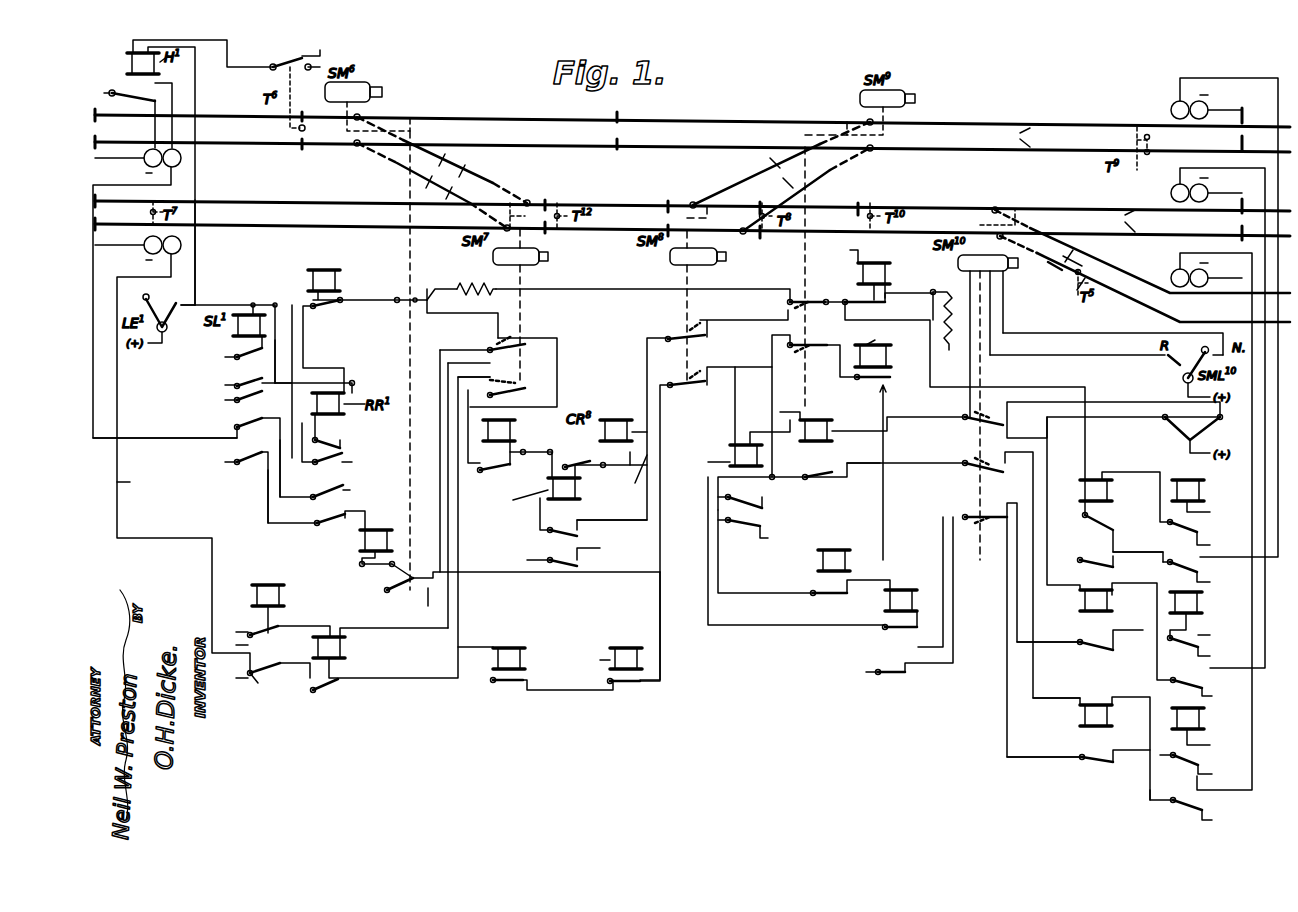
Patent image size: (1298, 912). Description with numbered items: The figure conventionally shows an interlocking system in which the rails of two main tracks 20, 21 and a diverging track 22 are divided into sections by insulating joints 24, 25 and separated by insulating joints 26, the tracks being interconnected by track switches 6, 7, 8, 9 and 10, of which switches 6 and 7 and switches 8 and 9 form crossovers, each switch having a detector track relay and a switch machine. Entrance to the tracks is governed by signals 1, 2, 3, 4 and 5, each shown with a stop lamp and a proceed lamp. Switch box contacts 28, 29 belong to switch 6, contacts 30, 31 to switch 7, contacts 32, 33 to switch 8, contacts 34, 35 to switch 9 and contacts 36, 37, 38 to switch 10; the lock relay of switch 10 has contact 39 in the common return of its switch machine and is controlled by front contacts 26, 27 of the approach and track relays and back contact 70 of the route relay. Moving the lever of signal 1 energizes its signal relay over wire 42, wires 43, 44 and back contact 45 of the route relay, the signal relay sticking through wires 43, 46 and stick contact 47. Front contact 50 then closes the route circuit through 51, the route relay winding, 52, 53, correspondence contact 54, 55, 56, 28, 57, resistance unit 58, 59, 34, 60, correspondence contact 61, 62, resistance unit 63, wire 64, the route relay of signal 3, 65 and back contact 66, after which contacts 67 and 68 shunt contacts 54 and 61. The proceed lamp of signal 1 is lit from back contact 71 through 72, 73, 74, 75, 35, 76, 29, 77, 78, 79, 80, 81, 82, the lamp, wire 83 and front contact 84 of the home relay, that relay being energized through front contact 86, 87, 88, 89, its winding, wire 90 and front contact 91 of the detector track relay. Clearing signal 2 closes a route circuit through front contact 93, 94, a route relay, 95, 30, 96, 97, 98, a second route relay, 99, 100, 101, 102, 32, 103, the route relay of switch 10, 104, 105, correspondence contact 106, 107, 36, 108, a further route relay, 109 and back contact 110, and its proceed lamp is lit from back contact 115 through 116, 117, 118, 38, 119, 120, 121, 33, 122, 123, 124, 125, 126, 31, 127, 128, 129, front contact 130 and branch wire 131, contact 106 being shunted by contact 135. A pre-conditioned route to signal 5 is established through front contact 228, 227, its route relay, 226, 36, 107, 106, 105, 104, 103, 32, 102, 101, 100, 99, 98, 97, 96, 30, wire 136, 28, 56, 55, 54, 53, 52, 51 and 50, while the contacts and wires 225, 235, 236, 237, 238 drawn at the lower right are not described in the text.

The signal 1 is at (165, 292).
The signal 2 is at (172, 451).
The signal 3 is at (1172, 106).
The signal 4 is at (1172, 190).
The signal 5 is at (1172, 275).
The track switch 6 is at (385, 120).
The track switch 7 is at (521, 216).
The track switch 8 is at (757, 180).
The track switch 9 is at (817, 265).
The track switch 10 is at (1018, 230).
The track rails 20 is at (1011, 137).
The track rails 21 is at (1121, 221).
The diverging track rails 22 is at (1170, 297).
The insulating joints 24 is at (627, 128).
The insulating joints 25 is at (692, 210).
The insulating joints 26 is at (813, 592).
The front contact of track relay T10 27 is at (870, 272).
The switch box contact 28 is at (403, 306).
The switch box contact 29 is at (526, 566).
The switch box contact 30 is at (491, 347).
The switch box contact 31 is at (492, 386).
The switch box contact 32 is at (678, 342).
The switch box contact 33 is at (715, 507).
The switch box contact 34 is at (811, 294).
The switch box contact 35 is at (823, 360).
The switch box contact 36 is at (1018, 575).
The switch box contact 37 is at (1088, 424).
The switch box contact 38 is at (1021, 630).
The contact of lock relay L10 39 is at (897, 606).
The wire 42 is at (229, 296).
The wire 43 is at (251, 300).
The wire 44 is at (275, 361).
The back contact of relay RR1 45 is at (335, 447).
The wire 46 is at (285, 305).
The stick contact 47 is at (233, 349).
The front contact of relay SL1 50 is at (239, 379).
The wire 51 is at (242, 395).
The wire 52 is at (315, 380).
The wire 53 is at (303, 350).
The correspondence relay contact 54 is at (326, 318).
The wire 55 is at (352, 282).
The wire 56 is at (395, 291).
The wire 57 is at (439, 280).
The resistance unit 58 is at (474, 278).
The wire 59 is at (574, 289).
The wire 60 is at (951, 391).
The correspondence relay contact 61 is at (888, 294).
The wire 62 is at (940, 286).
The resistance unit 63 is at (953, 318).
The wire 64 is at (1078, 388).
The wire 65 is at (1130, 472).
The back contact of relay SL3 66 is at (1195, 516).
The contact of relay RR1 67 is at (321, 431).
The contact of relay RR3 68 is at (1115, 521).
The back contact of relay RR10 70 is at (765, 551).
The back contact of relay SL3 71 is at (1197, 566).
The wire 72 is at (1138, 539).
The wire 73 is at (1090, 554).
The wire 74 is at (863, 425).
The wire 75 is at (868, 444).
The wire 76 is at (772, 391).
The wire 77 is at (392, 595).
The wire 78 is at (369, 551).
The wire 79 is at (337, 531).
The wire 80 is at (268, 490).
The wire 81 is at (260, 487).
The wire 82 is at (168, 438).
The wire 83 is at (175, 92).
The front contact of home relay H1 84 is at (120, 89).
The front contact of relay RR1 86 is at (341, 488).
The wire 87 is at (281, 470).
The wire 88 is at (274, 451).
The wire 89 is at (195, 380).
The wire 90 is at (232, 67).
The front contact of track relay T6 91 is at (293, 56).
The front contact of relay SL2 93 is at (263, 618).
The wire 94 is at (304, 623).
The wire 95 is at (400, 618).
The wire 96 is at (557, 375).
The wire 97 is at (494, 473).
The wire 98 is at (518, 449).
The wire 99 is at (565, 477).
The wire 100 is at (613, 470).
The wire 101 is at (631, 480).
The wire 102 is at (647, 373).
The wire 103 is at (718, 332).
The wire 104 is at (739, 444).
The wire 105 is at (841, 482).
The correspondence contact of relay CR10 106 is at (820, 467).
The wire 107 is at (863, 475).
The wire 108 is at (1075, 590).
The wire 109 is at (1157, 590).
The back contact of relay SL3 110 is at (1194, 627).
The back contact of relay SL3 115 is at (1185, 682).
The wire 116 is at (1140, 640).
The wire 117 is at (1087, 652).
The wire 118 is at (1048, 633).
The wire 119 is at (943, 533).
The wire 120 is at (904, 609).
The wire 121 is at (745, 625).
The wire 122 is at (670, 622).
The wire 123 is at (620, 684).
The wire 124 is at (573, 696).
The wire 125 is at (508, 686).
The wire 126 is at (462, 640).
The wire 127 is at (409, 526).
The wire 128 is at (333, 691).
The wire 129 is at (262, 666).
The front contact of relay SL2 130 is at (268, 686).
The wire 131 is at (135, 482).
The contact of relay RR10 135 is at (740, 493).
The wire 136 is at (480, 315).
The wire 225 is at (413, 606).
The wire 226 is at (1072, 703).
The wire 227 is at (1138, 741).
The front contact of relay SL5 228 is at (1180, 760).
The contact 235 is at (1190, 812).
The wire 236 is at (1148, 793).
The contact 237 is at (1103, 764).
The wire 238 is at (1003, 740).